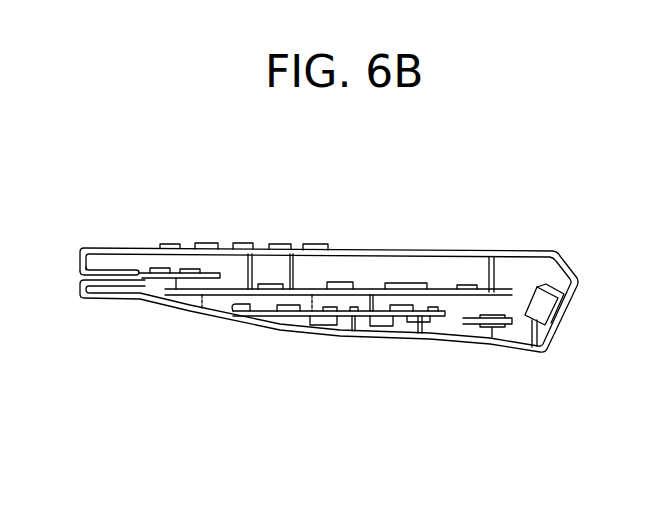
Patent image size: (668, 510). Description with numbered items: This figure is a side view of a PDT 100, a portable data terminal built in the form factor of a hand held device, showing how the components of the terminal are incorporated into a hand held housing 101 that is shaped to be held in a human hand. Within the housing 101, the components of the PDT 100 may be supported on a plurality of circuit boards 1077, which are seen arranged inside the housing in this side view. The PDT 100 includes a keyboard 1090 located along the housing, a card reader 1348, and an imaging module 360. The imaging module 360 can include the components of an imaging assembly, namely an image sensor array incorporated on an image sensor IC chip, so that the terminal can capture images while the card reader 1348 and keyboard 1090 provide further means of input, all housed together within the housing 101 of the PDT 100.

The PDT 100 is at (508, 180).
The hand held housing 101 is at (545, 250).
The imaging module 360 is at (559, 291).
The circuit boards 1077 is at (468, 308).
The keyboard 1090 is at (210, 244).
The card reader 1348 is at (73, 272).